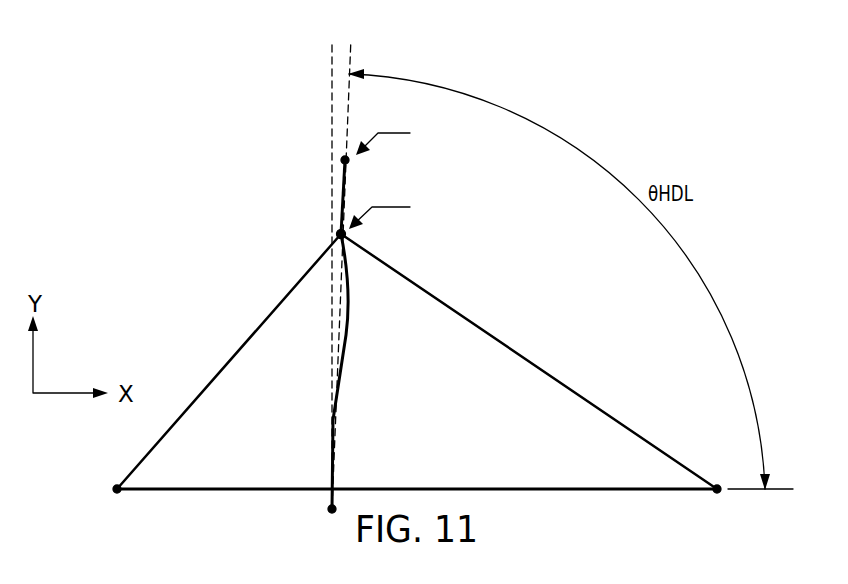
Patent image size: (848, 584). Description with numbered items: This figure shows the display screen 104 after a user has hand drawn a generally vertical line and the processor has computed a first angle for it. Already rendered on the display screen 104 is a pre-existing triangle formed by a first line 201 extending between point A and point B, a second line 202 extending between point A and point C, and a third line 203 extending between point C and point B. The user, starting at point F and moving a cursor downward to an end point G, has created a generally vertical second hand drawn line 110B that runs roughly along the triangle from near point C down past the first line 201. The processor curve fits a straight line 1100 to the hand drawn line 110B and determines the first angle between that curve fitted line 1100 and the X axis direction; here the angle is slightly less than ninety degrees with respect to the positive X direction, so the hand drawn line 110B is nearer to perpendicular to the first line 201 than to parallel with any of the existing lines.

The curve fitted straight line 1100 is at (351, 64).
The display screen 104 is at (234, 158).
The second hand drawn line 110B is at (348, 318).
The second line 202 is at (228, 361).
The third line 203 is at (525, 360).
The first line 201 is at (555, 491).